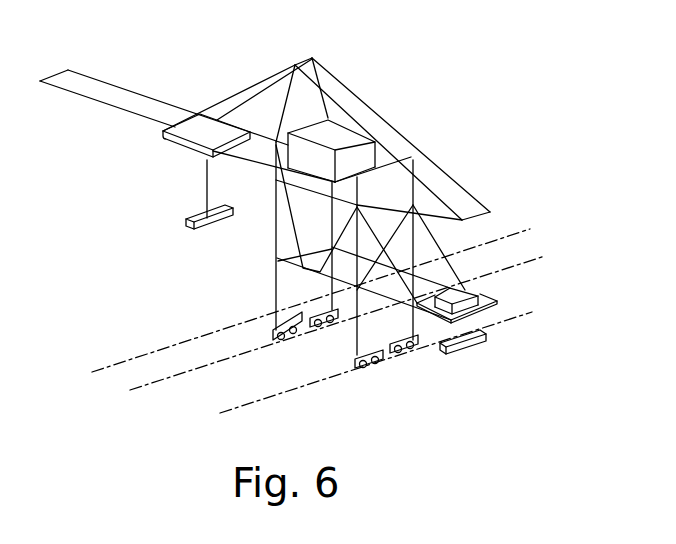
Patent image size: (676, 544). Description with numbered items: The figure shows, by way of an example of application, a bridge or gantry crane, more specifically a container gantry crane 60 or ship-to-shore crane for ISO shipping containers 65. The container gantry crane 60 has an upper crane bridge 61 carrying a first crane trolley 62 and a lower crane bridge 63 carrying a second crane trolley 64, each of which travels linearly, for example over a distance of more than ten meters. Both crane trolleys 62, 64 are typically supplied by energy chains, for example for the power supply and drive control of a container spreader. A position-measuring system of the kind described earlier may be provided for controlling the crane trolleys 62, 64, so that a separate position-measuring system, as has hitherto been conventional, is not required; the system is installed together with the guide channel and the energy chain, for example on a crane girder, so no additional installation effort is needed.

The container gantry crane 60 is at (383, 104).
The upper crane bridge 61 is at (97, 70).
The first crane trolley 62 is at (178, 140).
The lower crane bridge 63 is at (500, 297).
The second crane trolley 64 is at (466, 284).
The ISO shipping container 65 is at (183, 222).